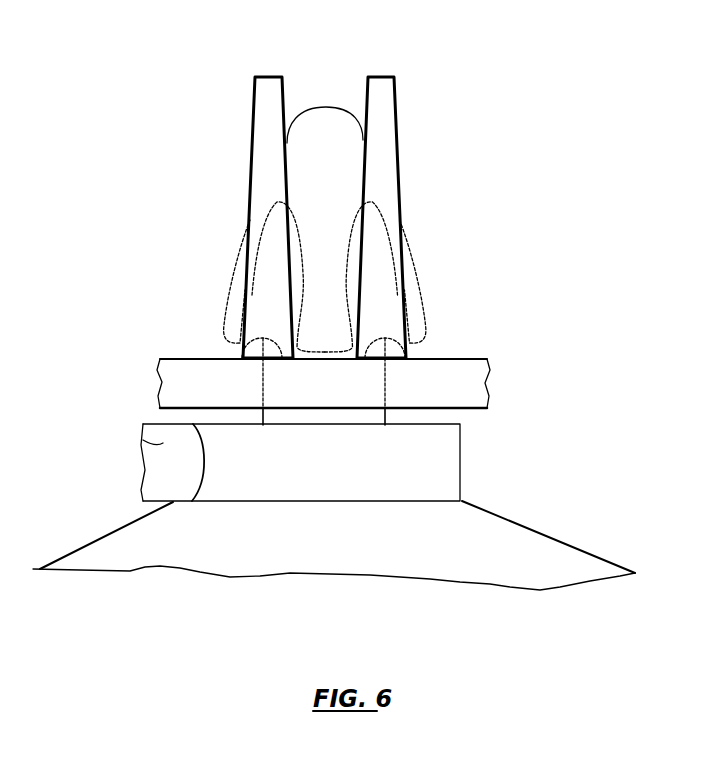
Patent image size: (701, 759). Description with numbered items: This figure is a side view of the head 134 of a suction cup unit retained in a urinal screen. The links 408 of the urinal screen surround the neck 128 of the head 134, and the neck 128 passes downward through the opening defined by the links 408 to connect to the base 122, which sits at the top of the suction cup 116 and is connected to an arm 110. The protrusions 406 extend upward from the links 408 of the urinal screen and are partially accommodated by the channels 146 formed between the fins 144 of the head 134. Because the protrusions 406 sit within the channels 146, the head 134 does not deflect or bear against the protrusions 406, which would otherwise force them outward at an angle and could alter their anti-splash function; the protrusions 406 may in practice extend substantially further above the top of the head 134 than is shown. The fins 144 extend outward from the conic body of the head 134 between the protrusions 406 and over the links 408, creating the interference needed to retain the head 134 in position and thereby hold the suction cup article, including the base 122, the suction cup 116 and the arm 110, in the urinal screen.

The protrusions 406 is at (253, 112).
The head 134 is at (325, 100).
The fins 144 is at (325, 308).
The channels 146 is at (290, 267).
The neck 128 is at (258, 385).
The links 408 is at (420, 373).
The base 122 is at (392, 460).
The arm 110 is at (163, 443).
The suction cup 116 is at (345, 552).